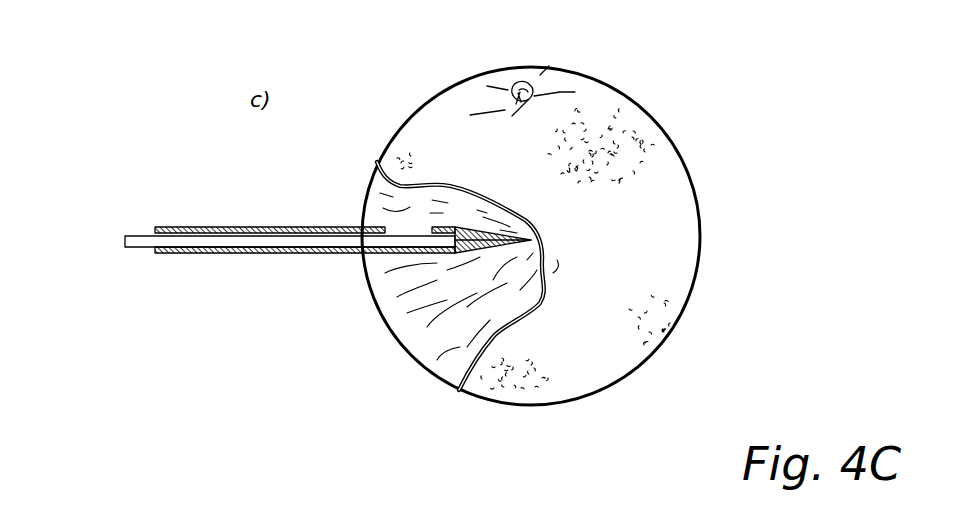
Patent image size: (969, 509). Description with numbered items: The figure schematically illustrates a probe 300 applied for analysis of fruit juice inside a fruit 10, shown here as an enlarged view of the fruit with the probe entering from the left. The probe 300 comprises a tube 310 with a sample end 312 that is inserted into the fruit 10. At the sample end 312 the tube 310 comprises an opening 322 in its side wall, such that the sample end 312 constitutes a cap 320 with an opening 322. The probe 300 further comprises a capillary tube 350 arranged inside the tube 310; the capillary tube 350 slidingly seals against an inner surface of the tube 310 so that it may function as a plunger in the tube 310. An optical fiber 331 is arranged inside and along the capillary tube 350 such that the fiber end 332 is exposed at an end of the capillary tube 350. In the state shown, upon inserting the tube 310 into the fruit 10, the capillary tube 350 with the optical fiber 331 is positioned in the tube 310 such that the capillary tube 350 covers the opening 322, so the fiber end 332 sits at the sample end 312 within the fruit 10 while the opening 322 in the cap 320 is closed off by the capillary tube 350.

The probe 300 is at (188, 95).
The tube 310 is at (172, 253).
The sample end 312 is at (320, 227).
The cap 320 is at (457, 227).
The opening 322 is at (412, 230).
The optical fiber 331 is at (165, 238).
The fiber end 332 is at (527, 240).
The capillary tube 350 is at (198, 240).
The fruit 10 is at (583, 370).